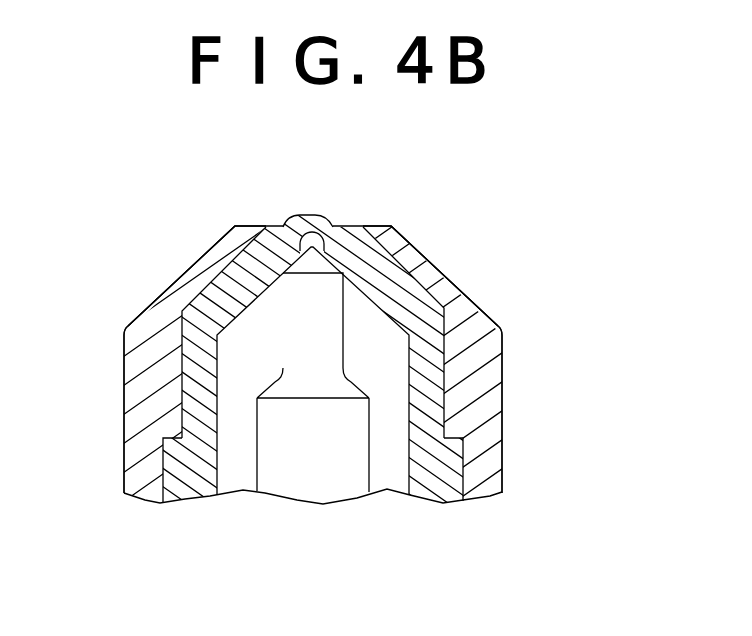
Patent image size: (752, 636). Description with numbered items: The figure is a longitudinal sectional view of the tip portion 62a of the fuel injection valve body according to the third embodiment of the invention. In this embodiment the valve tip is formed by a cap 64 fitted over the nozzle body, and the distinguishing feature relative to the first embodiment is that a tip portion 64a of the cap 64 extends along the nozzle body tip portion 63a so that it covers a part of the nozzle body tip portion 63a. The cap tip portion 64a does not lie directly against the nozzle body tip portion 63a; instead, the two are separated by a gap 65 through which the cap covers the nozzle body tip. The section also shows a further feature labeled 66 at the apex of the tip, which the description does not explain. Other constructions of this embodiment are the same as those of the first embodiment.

The tip portion of the fuel injection valve body 62a is at (178, 217).
The nozzle body tip portion 63a is at (312, 228).
The cap 64 is at (481, 480).
The tip portion of the cap 64a is at (440, 275).
The gap 65 is at (418, 267).
The rounded tip 66 is at (315, 216).